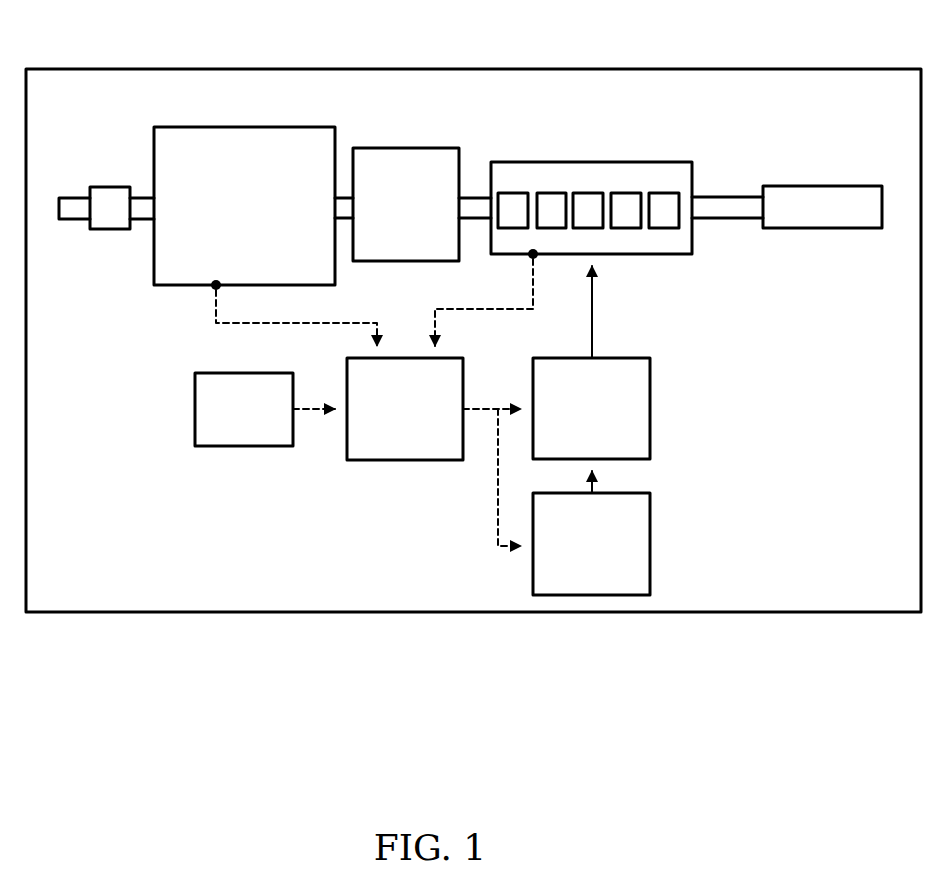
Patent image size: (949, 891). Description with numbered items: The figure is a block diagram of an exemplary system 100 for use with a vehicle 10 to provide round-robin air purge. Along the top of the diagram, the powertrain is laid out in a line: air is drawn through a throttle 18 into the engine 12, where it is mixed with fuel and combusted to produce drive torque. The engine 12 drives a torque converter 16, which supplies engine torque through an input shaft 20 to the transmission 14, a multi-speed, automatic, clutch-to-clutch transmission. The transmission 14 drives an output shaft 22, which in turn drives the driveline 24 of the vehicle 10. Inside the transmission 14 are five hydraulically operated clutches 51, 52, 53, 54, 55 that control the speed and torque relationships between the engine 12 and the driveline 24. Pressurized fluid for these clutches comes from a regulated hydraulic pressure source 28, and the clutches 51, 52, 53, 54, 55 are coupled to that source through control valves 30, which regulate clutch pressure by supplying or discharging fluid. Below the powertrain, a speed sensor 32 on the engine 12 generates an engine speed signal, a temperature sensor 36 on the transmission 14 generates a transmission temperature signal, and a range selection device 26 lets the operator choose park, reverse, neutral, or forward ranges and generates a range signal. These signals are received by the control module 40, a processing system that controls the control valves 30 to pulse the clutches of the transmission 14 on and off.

The vehicle 10 is at (473, 69).
The engine 12 is at (245, 127).
The transmission 14 is at (592, 162).
The torque converter 16 is at (404, 148).
The throttle 18 is at (113, 187).
The input shaft 20 is at (467, 197).
The output shaft 22 is at (727, 197).
The driveline 24 is at (823, 186).
The range selection device 26 is at (195, 408).
The hydraulic pressure source 28 is at (650, 546).
The control valves 30 is at (622, 362).
The speed sensor 32 is at (212, 287).
The temperature sensor 36 is at (529, 256).
The control module 40 is at (403, 460).
The hydraulically operated clutch 51 is at (515, 193).
The hydraulically operated clutch 52 is at (553, 228).
The hydraulically operated clutch 53 is at (590, 228).
The hydraulically operated clutch 54 is at (628, 228).
The hydraulically operated clutch 55 is at (665, 193).
The system 100 is at (218, 512).